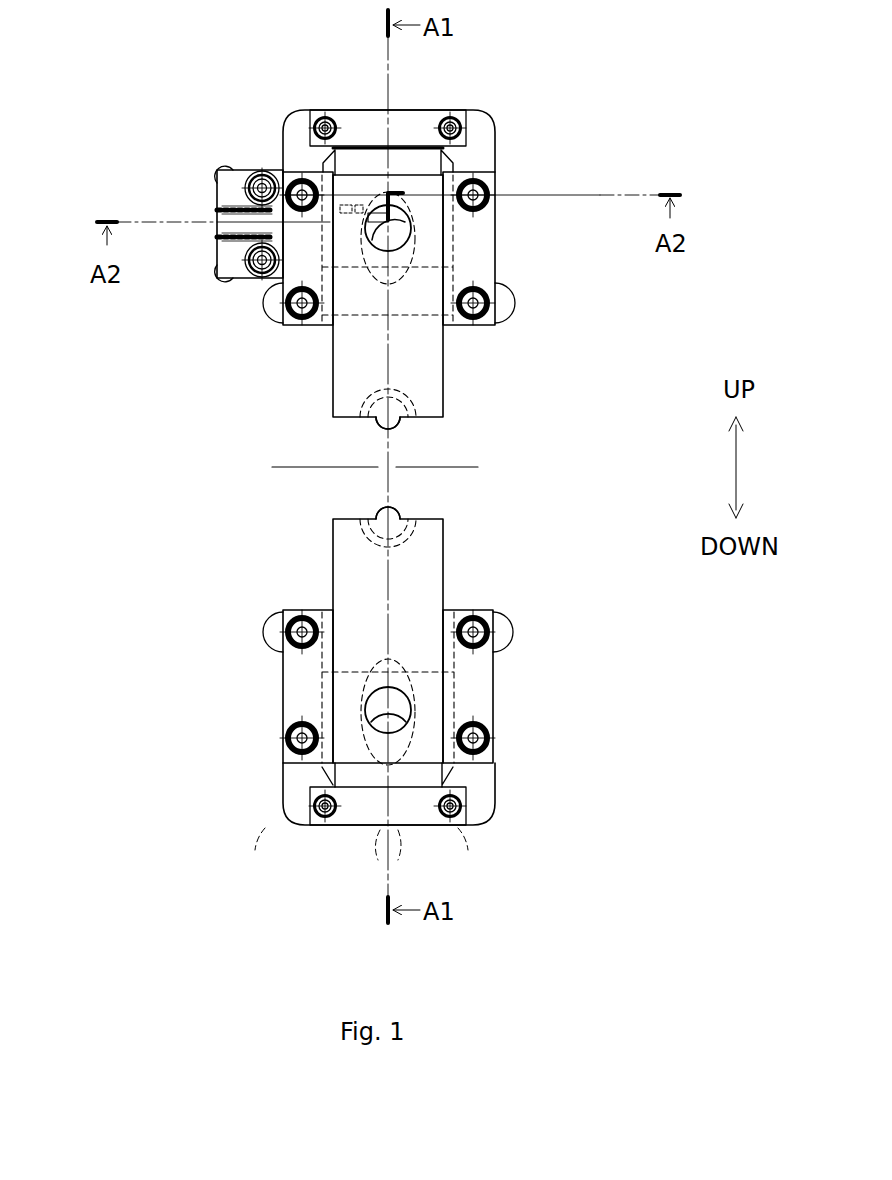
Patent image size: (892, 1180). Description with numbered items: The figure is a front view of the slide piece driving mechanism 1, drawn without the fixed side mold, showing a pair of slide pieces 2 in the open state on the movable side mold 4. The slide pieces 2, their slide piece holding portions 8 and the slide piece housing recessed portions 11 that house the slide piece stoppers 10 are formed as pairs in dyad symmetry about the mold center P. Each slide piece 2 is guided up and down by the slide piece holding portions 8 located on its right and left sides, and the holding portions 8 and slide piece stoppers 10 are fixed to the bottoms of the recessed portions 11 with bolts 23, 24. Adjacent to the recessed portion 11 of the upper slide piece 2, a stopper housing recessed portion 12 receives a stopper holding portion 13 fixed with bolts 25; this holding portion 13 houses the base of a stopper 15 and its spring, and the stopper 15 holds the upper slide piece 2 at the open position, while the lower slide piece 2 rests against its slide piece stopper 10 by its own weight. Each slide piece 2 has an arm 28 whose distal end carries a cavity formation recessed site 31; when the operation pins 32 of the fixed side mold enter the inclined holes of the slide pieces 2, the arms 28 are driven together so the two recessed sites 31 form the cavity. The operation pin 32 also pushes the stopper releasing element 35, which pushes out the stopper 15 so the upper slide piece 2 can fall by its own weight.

The slide piece driving mechanism 1 is at (300, 110).
The slide piece 2 is at (440, 358).
The movable side mold 4 is at (510, 110).
The slide piece holding portion 8 is at (482, 248).
The slide piece stopper 10 is at (372, 120).
The slide piece housing recessed portion 11 is at (486, 155).
The stopper housing recessed portion 12 is at (224, 182).
The stopper holding portion 13 is at (222, 248).
The stopper 15 is at (302, 228).
The bolt 23 is at (300, 172).
The bolt 24 is at (325, 112).
The bolt 25 is at (254, 176).
The arm 28 is at (338, 412).
The cavity formation recessed site 31 is at (395, 420).
The operation pin 32 is at (405, 235).
The stopper releasing element 35 is at (358, 212).
The mold center P is at (388, 467).